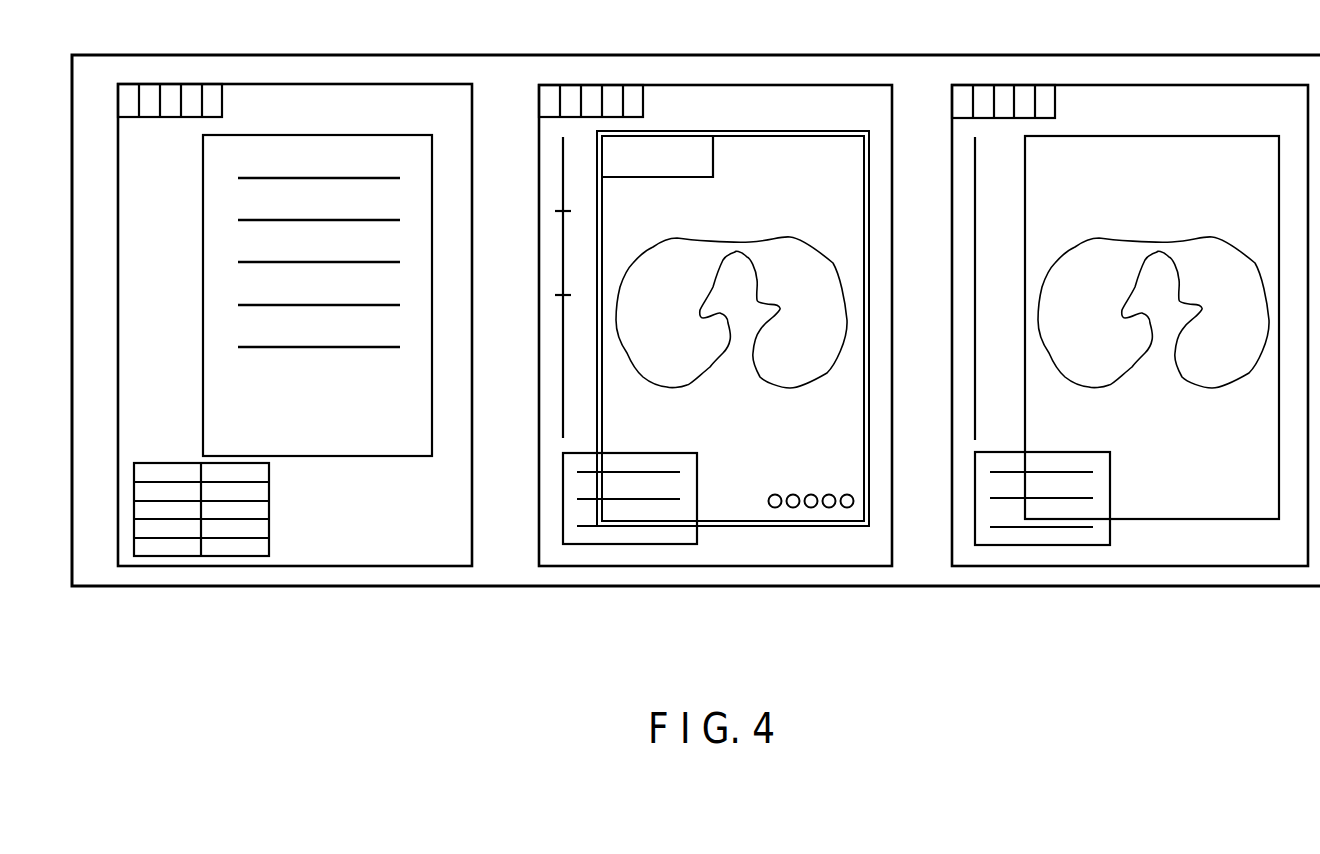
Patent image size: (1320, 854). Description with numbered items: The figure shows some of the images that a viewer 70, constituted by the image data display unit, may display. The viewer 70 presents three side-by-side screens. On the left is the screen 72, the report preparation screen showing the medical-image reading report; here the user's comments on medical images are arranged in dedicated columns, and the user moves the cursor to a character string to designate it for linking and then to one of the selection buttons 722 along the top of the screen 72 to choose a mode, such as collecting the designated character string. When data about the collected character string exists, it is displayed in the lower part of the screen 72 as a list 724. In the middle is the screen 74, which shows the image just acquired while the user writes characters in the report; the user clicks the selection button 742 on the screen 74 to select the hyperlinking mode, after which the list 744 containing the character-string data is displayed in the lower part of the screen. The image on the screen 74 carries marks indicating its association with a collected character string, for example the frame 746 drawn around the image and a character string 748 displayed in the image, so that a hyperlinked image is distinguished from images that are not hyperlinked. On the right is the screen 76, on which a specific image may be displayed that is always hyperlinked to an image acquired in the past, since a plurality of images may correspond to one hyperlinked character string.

The viewer 70 is at (91, 586).
The screen 72 is at (315, 566).
The selection buttons 722 is at (148, 110).
The list 724 is at (176, 556).
The screen 74 is at (733, 566).
The selection button 742 is at (591, 90).
The list 744 is at (590, 544).
The frame 746 is at (847, 130).
The character string 748 is at (808, 508).
The screen 76 is at (1143, 566).